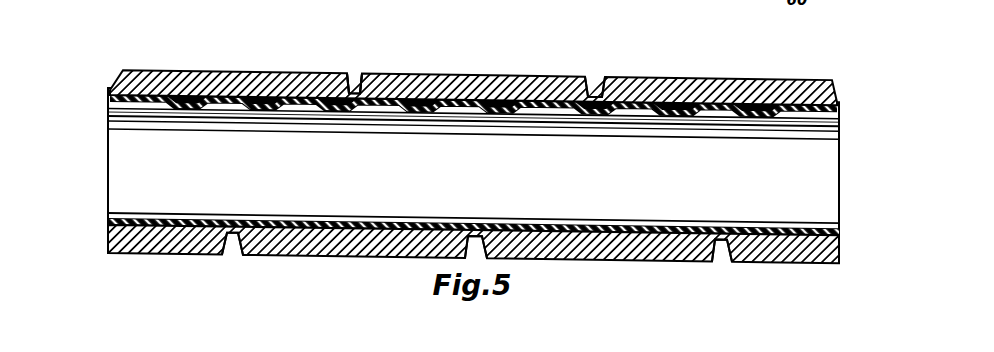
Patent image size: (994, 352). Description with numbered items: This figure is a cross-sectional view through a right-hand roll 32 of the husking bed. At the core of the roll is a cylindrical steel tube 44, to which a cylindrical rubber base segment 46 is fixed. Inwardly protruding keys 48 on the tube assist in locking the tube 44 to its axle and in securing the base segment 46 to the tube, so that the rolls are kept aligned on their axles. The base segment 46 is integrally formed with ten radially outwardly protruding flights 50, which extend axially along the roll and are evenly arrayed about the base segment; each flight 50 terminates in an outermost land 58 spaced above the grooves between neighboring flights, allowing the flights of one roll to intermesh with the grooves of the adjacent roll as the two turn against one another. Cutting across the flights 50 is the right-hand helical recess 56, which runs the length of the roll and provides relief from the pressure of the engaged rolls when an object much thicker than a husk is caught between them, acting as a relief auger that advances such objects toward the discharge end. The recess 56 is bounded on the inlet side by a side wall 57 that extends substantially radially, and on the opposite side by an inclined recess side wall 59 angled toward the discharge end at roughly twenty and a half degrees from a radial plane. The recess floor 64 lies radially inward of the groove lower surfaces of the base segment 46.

The right-hand roll 32 is at (287, 62).
The cylindrical steel tube 44 is at (108, 143).
The cylindrical rubber base segment 46 is at (356, 80).
The inwardly protruding keys 48 is at (192, 113).
The flights 50 is at (667, 80).
The right-hand helical recess 56 is at (602, 88).
The radial side wall 57 is at (347, 72).
The outermost lands 58 is at (444, 76).
The inclined recess side wall 59 is at (364, 77).
The recess floor 64 is at (228, 238).